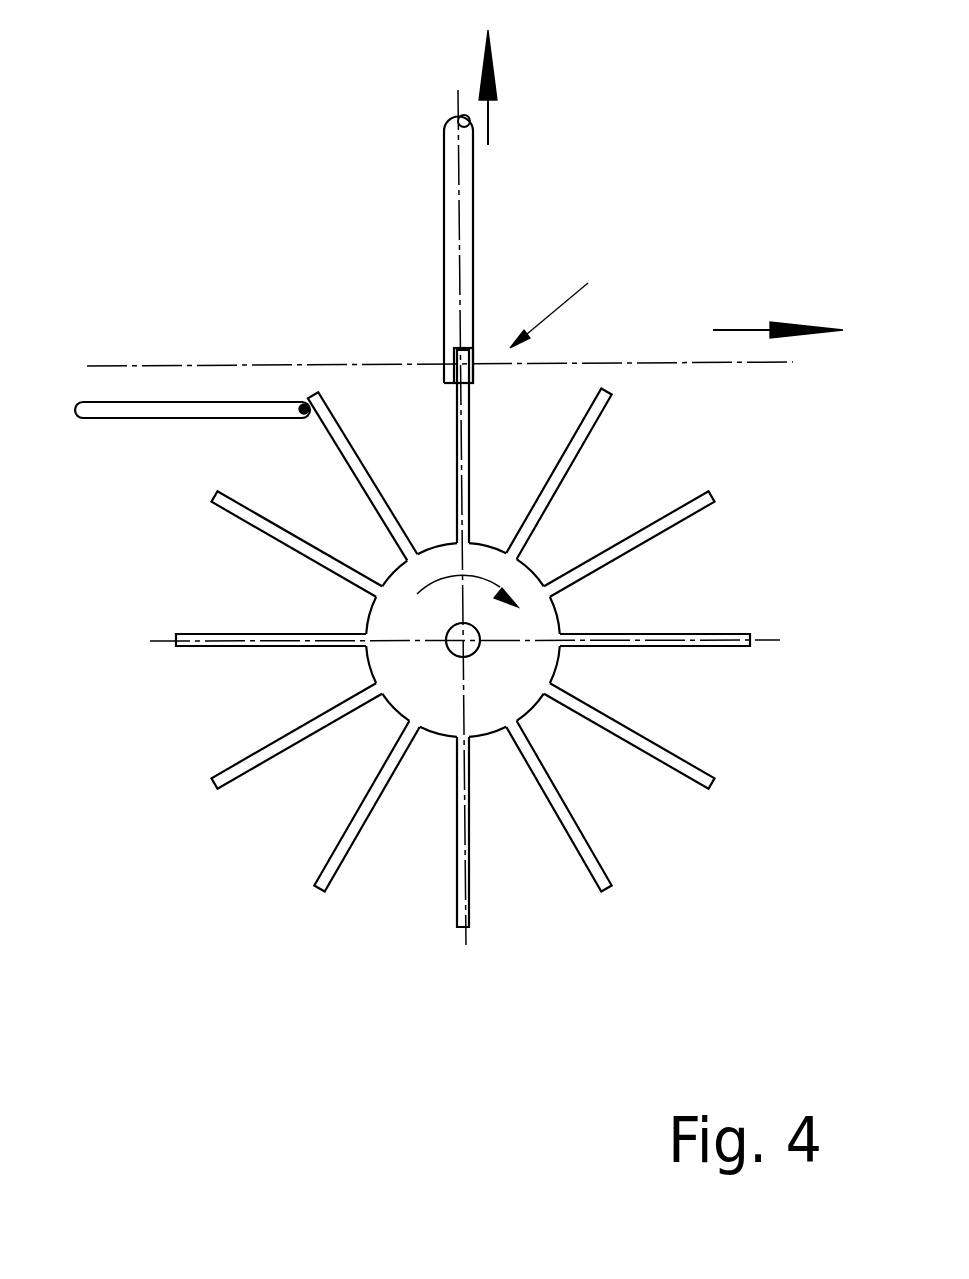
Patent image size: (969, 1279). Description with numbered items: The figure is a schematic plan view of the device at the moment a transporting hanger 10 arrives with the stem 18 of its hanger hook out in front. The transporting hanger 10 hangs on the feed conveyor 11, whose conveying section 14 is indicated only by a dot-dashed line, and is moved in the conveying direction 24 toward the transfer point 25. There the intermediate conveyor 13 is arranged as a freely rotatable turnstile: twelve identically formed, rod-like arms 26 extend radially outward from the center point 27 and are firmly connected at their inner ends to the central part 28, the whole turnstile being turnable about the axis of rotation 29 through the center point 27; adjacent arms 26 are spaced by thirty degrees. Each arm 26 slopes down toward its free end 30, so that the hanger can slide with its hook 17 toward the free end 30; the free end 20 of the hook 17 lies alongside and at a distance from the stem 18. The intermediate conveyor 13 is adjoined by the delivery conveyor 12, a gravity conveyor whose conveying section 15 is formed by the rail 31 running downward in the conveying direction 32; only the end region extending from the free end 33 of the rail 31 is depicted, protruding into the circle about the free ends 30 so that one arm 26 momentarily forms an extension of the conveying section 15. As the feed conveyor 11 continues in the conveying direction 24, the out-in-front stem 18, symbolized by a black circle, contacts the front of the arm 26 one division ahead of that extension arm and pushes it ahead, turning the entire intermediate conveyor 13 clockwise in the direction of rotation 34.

The transporting hanger 10 is at (175, 381).
The feed conveyor 11 is at (426, 308).
The conveying section of the feed conveyor 14 is at (108, 365).
The delivery conveyor 12 is at (516, 246).
The intermediate conveyor 13 is at (420, 674).
The conveying section of the delivery conveyor 15 is at (458, 183).
The hook 17 is at (175, 456).
The stem 18 is at (303, 405).
The free end 20 is at (80, 420).
The conveying direction 24 is at (738, 328).
The transfer point 25 is at (564, 305).
The arm 26 is at (470, 435).
The center point 27 is at (407, 811).
The axis of rotation 29 is at (450, 653).
The central part 28 is at (393, 662).
The free end of the arm 30 is at (468, 350).
The rail 31 is at (452, 138).
The conveying direction of the delivery conveyor 32 is at (492, 130).
The free end of the rail 33 is at (447, 382).
The direction of rotation 34 is at (478, 576).